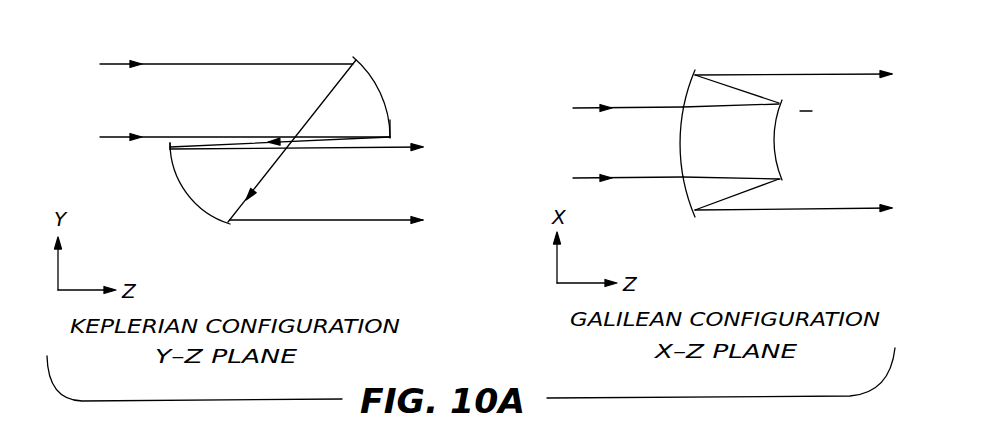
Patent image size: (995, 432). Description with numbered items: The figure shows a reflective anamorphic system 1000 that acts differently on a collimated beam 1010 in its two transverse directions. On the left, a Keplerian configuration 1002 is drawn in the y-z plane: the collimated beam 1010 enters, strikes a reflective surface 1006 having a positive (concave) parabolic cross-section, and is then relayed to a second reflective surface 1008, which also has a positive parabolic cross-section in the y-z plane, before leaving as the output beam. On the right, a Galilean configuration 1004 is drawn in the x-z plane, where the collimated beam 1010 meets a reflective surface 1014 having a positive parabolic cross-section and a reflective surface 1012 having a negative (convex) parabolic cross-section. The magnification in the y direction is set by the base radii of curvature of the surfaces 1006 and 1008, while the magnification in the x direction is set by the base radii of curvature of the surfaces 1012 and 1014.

The reflective anamorphic system 1000 is at (428, 22).
The Keplerian configuration 1002 is at (300, 110).
The Galilean configuration 1004 is at (761, 155).
The reflective surface 1006 is at (383, 80).
The reflective surface 1008 is at (177, 177).
The collimated beam 1010 is at (101, 110).
The reflective surface 1012 is at (781, 147).
The reflective surface 1014 is at (680, 152).